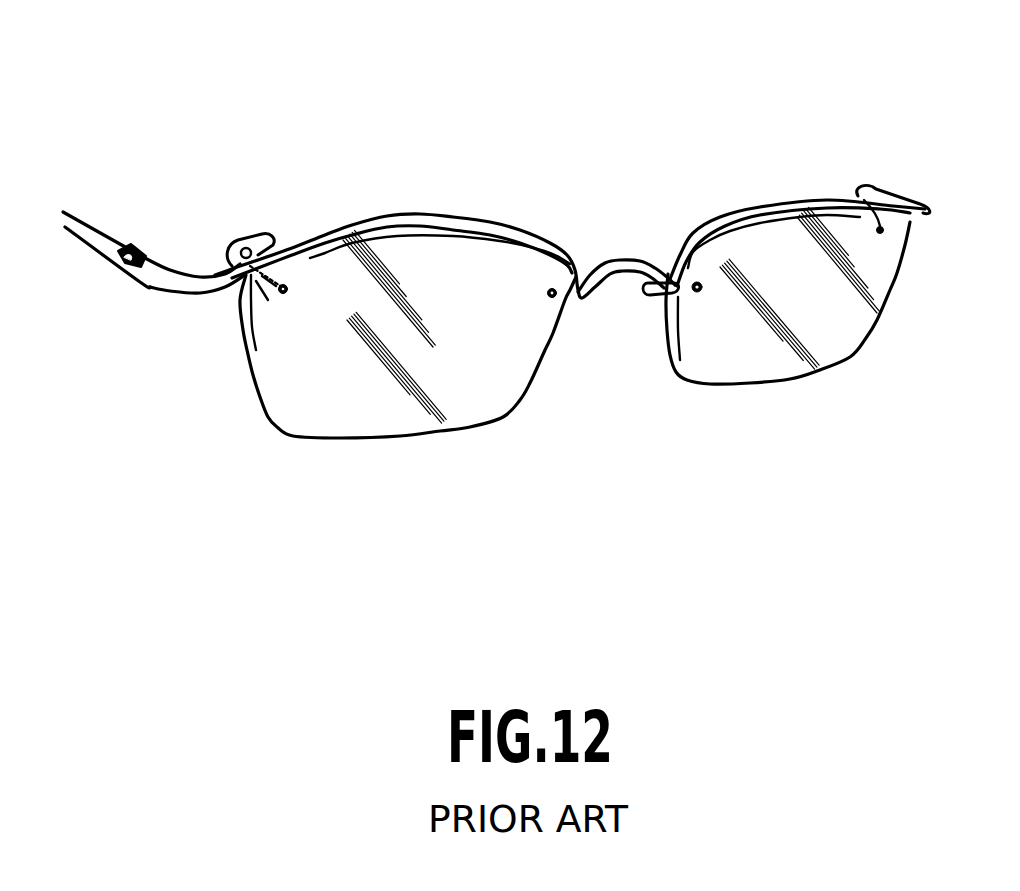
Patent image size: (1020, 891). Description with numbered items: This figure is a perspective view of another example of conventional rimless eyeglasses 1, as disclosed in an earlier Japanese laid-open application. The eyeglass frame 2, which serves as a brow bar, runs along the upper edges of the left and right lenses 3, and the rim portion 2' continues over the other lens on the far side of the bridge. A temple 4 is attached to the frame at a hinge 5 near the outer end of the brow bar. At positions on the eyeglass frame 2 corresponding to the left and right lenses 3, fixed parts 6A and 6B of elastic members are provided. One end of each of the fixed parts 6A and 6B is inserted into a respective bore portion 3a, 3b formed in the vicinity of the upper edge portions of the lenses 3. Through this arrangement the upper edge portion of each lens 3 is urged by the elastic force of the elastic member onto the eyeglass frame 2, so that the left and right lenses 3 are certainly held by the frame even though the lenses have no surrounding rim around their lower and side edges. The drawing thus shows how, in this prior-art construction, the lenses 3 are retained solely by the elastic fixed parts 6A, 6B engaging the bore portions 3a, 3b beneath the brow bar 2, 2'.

The eyeglasses 1 is at (503, 150).
The eyeglass frame 2 is at (445, 210).
The rim (right) 2' is at (773, 220).
The lens 3 is at (420, 433).
The bore portion 3a is at (283, 291).
The bore portion 3b is at (549, 297).
The temple 4 is at (90, 235).
The hinge 5 is at (133, 248).
The fixed part 6A is at (240, 237).
The fixed part 6B is at (653, 292).